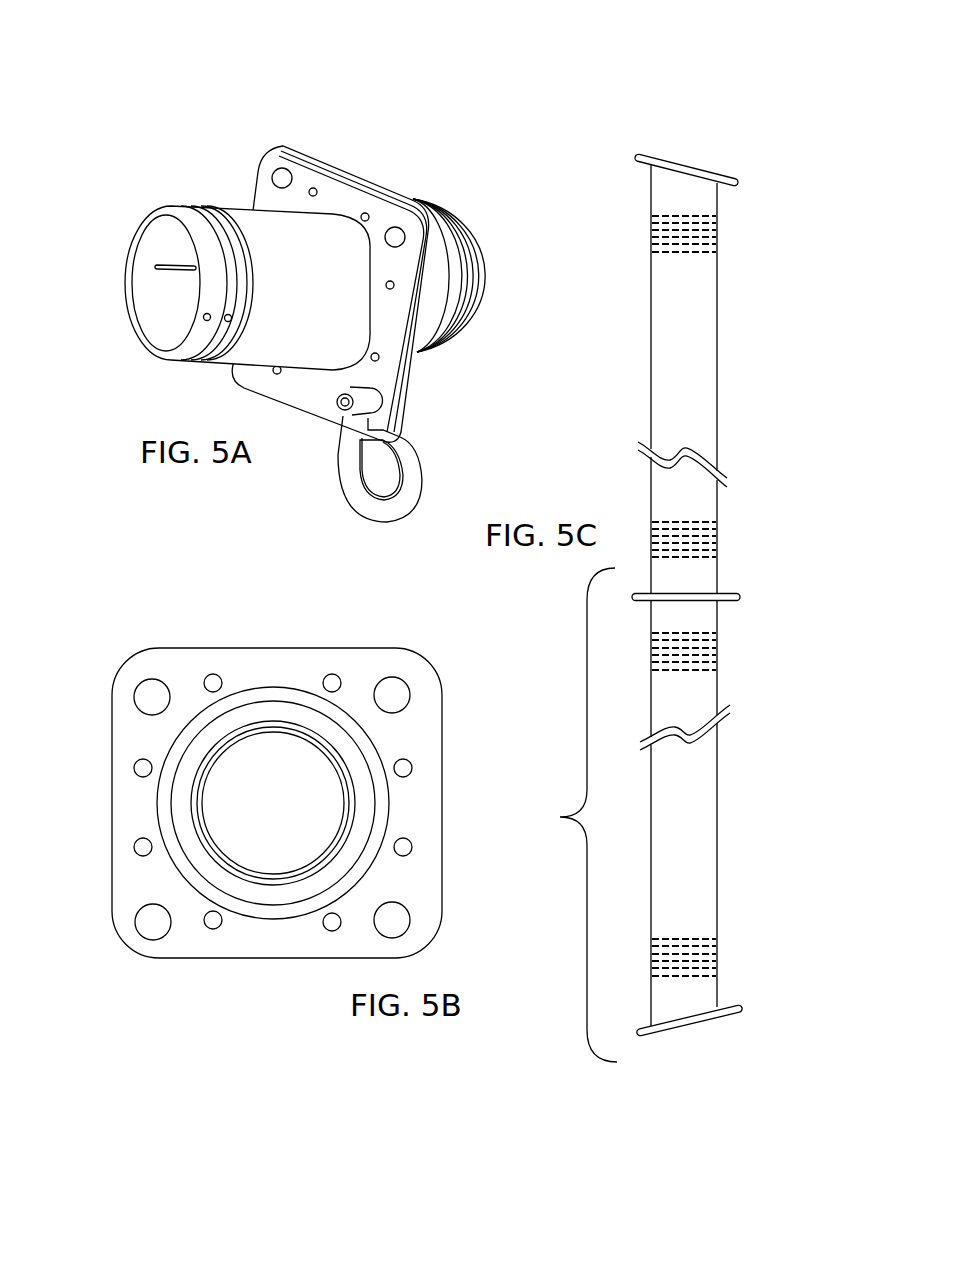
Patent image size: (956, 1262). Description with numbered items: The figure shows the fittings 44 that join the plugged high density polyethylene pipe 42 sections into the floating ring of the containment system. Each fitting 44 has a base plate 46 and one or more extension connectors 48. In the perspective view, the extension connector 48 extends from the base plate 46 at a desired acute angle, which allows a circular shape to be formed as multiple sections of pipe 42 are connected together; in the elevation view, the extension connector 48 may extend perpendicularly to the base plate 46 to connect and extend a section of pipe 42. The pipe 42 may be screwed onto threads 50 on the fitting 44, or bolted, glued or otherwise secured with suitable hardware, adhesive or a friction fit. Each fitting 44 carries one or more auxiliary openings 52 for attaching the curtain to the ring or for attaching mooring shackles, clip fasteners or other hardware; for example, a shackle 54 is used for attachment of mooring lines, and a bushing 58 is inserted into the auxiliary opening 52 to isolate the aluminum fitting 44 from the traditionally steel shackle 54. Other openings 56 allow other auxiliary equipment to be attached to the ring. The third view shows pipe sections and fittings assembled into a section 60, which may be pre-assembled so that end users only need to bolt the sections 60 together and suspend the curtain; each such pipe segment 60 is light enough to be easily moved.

In FIG. 5B, the pipe 42 is at (373, 767).
In FIG. 5C, the pipe 42 is at (678, 323).
In FIG. 5A, the fitting 44 is at (315, 121).
In FIG. 5C, the fitting 44 is at (680, 162).
In FIG. 5A, the base plate 46 is at (328, 200).
In FIG. 5B, the base plate 46 is at (242, 940).
In FIG. 5A, the extension connector 48 is at (262, 255).
In FIG. 5B, the extension connector 48 is at (185, 777).
In FIG. 5A, the threads 50 is at (217, 267).
In FIG. 5A, the auxiliary opening 52 is at (398, 232).
In FIG. 5B, the auxiliary opening 52 is at (152, 700).
In FIG. 5A, the shackle 54 is at (350, 480).
In FIG. 5A, the other opening 56 is at (395, 285).
In FIG. 5B, the other opening 56 is at (213, 685).
In FIG. 5A, the bushing 58 is at (362, 402).
In FIG. 5C, the section 60 is at (563, 815).